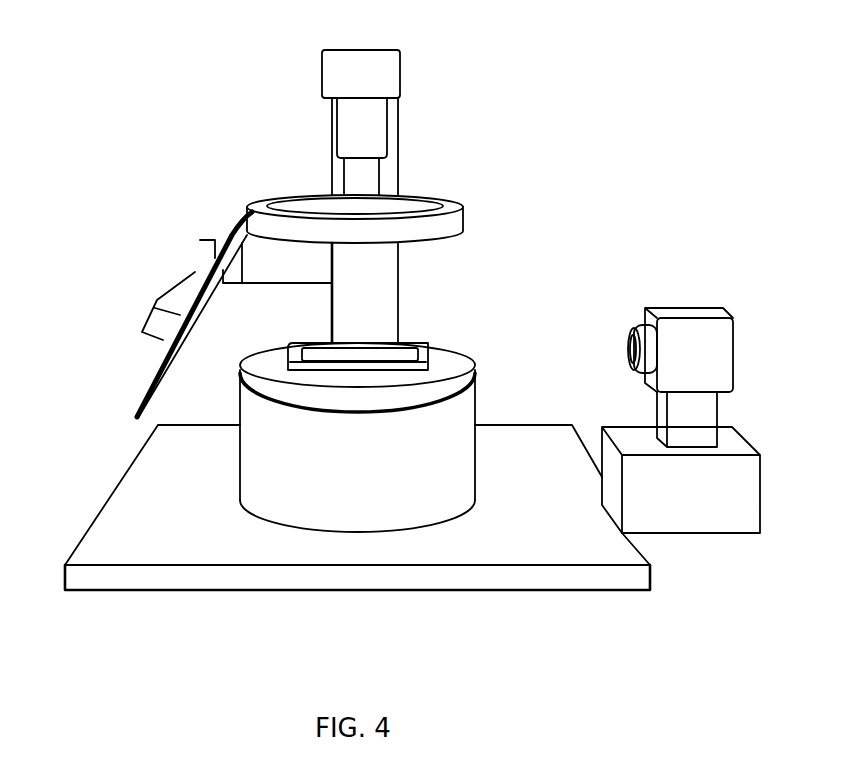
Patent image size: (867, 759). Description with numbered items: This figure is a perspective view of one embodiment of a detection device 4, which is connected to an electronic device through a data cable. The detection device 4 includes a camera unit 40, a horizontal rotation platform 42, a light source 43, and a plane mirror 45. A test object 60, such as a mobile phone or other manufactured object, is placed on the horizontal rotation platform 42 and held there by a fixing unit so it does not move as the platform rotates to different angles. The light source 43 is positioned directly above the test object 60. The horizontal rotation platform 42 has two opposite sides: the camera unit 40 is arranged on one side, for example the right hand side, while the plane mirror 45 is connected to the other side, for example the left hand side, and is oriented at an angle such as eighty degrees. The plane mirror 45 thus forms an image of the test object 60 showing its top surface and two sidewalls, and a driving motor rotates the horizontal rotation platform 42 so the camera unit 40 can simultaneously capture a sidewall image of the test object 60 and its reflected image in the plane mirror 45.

The detection device 4 is at (567, 122).
The camera unit 40 is at (686, 288).
The horizontal rotation platform 42 is at (460, 331).
The light source 43 is at (270, 185).
The plane mirror 45 is at (135, 305).
The test object 60 is at (298, 378).